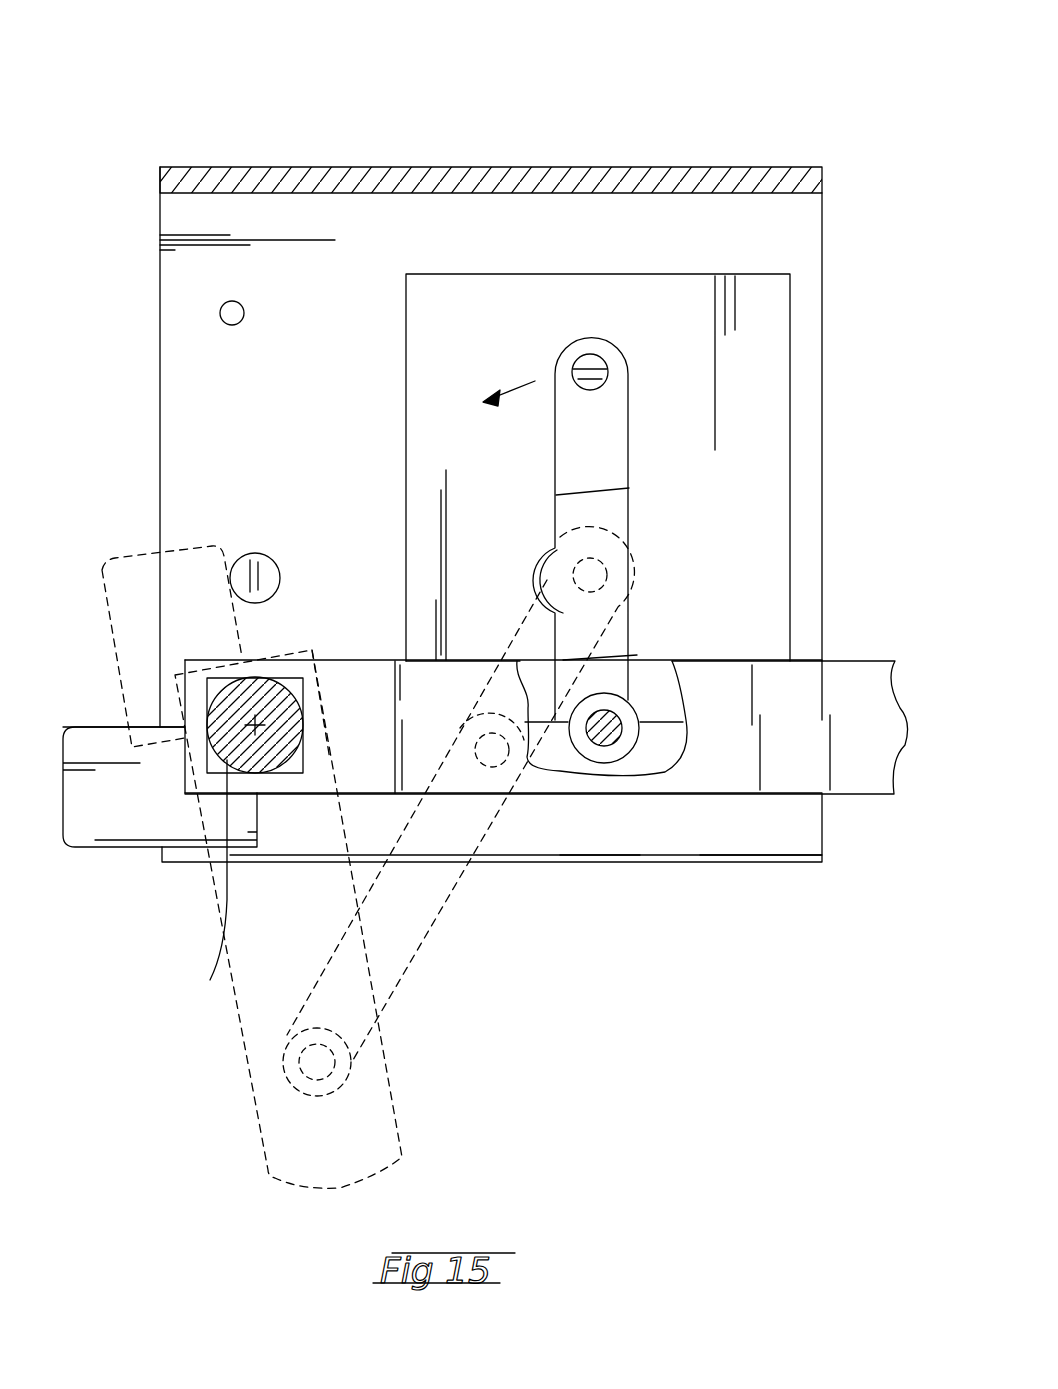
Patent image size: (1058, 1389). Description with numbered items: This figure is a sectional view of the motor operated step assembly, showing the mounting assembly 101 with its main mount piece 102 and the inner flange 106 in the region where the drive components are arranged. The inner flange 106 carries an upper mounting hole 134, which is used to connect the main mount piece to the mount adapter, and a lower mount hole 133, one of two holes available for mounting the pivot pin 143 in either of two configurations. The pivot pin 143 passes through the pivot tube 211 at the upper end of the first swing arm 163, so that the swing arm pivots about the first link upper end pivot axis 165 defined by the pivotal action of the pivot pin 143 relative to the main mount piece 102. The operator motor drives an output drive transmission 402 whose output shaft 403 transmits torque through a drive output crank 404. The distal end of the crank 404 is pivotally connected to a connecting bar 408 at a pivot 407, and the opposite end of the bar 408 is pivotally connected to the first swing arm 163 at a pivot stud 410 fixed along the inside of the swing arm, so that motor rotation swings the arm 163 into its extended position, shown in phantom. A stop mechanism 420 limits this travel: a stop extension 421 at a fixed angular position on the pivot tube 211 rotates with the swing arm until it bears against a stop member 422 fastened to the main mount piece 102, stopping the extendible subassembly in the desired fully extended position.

The mounting assembly 101 is at (521, 433).
The main mount piece 102 is at (333, 166).
The inner flange 106 is at (750, 238).
The upper mounting hole 134 is at (230, 314).
The output drive transmission 402 is at (492, 272).
The pivot 407 is at (578, 364).
The drive output crank 404 is at (593, 533).
The connecting bar 408 is at (592, 427).
The output shaft 403 is at (607, 570).
The stop member 422 is at (270, 560).
The stop extension 421 is at (133, 597).
The pivot tube 211 is at (317, 647).
The stop mechanism 420 is at (177, 684).
The first swing arm 163 is at (862, 705).
The pivot pin 143 is at (270, 740).
The pivot stud 410 is at (607, 733).
The first link upper end pivot axis 165 is at (188, 790).
The lower mount hole 133 is at (204, 885).